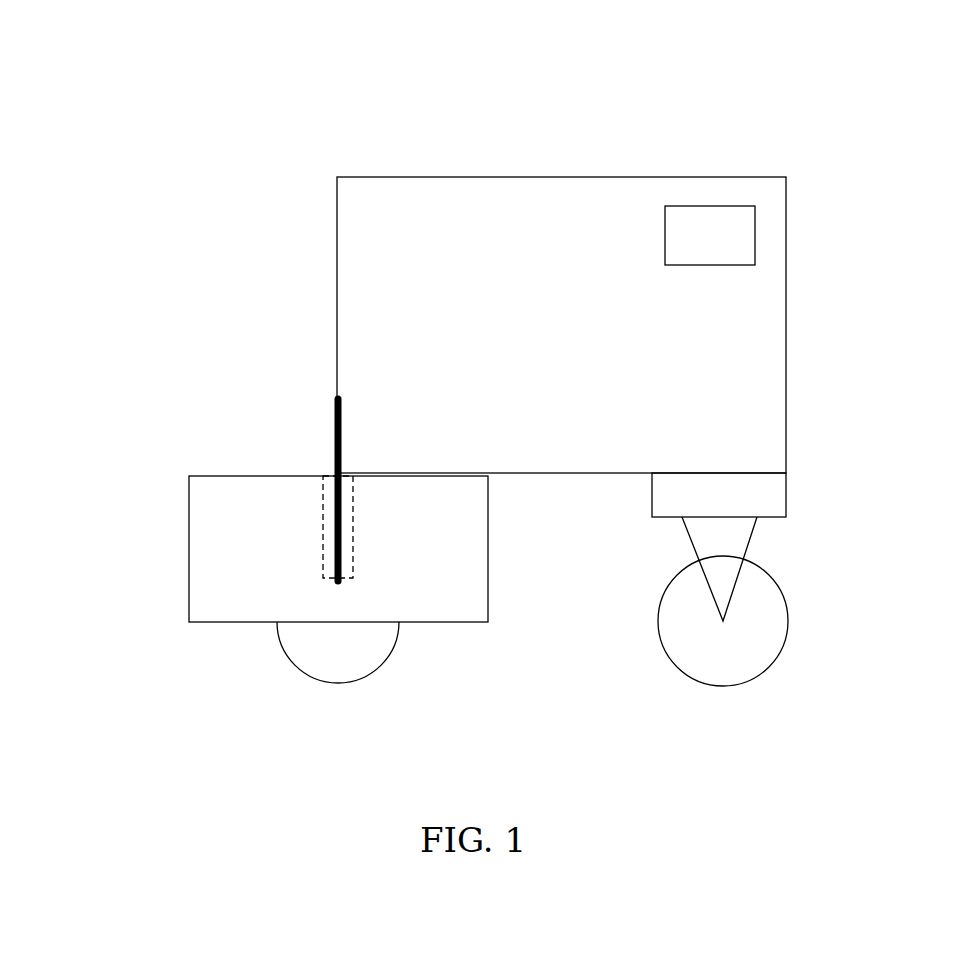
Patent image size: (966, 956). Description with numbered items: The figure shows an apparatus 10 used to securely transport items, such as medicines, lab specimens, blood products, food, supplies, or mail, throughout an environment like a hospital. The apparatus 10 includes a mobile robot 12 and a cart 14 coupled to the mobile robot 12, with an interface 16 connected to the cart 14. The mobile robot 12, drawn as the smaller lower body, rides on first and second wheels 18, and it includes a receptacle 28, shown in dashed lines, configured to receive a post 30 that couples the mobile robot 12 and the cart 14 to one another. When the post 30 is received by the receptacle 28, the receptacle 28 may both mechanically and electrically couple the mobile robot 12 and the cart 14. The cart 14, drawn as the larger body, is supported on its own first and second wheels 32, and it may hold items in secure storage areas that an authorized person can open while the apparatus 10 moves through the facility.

The apparatus 10 is at (358, 80).
The mobile robot 12 is at (218, 474).
The cart 14 is at (786, 320).
The interface 16 is at (710, 235).
The first and second wheels 18 is at (393, 650).
The receptacle 28 is at (353, 519).
The post 30 is at (331, 430).
The first and second wheels 32 is at (668, 657).